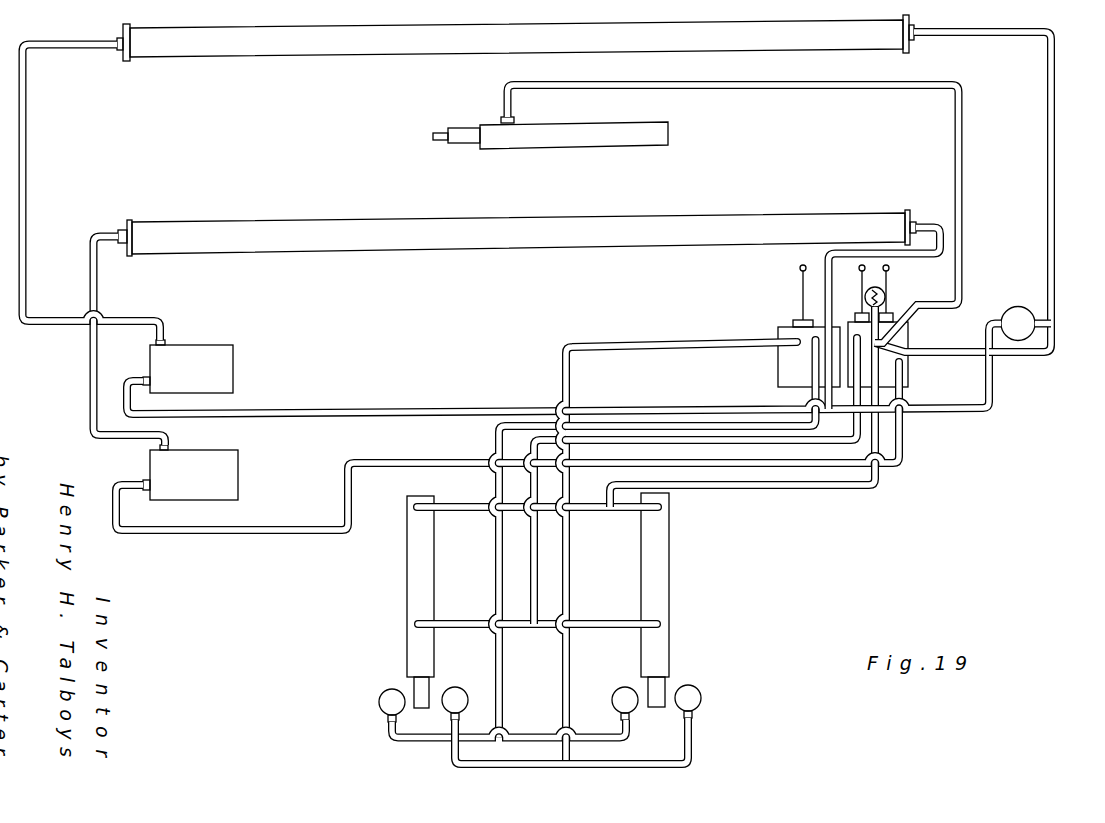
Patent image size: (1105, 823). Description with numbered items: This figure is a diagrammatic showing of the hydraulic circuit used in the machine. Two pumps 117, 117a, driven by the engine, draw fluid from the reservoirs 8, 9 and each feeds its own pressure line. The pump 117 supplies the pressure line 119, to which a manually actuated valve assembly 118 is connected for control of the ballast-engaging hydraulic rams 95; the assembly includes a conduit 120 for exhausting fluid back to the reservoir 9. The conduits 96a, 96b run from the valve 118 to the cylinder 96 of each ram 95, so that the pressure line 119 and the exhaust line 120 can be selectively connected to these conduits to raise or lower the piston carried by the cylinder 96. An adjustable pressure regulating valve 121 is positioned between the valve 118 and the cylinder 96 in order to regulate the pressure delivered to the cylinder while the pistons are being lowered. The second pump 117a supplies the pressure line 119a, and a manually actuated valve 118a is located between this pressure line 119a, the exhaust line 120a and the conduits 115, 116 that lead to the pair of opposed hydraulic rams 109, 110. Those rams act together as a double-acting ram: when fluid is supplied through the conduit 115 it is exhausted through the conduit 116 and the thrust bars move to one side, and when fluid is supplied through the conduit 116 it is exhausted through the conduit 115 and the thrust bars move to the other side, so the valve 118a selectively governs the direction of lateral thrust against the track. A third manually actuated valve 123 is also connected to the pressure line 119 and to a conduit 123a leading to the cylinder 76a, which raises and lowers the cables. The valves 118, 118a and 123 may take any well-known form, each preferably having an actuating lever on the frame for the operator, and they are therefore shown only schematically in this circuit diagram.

The reservoir 9 is at (753, 40).
The reservoir 8 is at (715, 230).
The cylinder 76a is at (582, 143).
The conduit 120 is at (1056, 208).
The conduit 123a is at (953, 149).
The exhaust line 120a is at (823, 268).
The adjustable pressure regulating valve 121 is at (1010, 304).
The third manually actuated valve 123 is at (912, 372).
The manually actuated valve assembly 118 is at (862, 392).
The manually actuated valve 118a is at (778, 373).
The pump 117a is at (237, 360).
The pump 117 is at (240, 463).
The pressure line 119a is at (333, 408).
The pressure line 119 is at (367, 465).
The hydraulic ram 95 is at (395, 574).
The cylinder 96 is at (412, 602).
The conduit 96a is at (622, 510).
The conduit 96b is at (605, 617).
The hydraulic ram 109 is at (457, 692).
The hydraulic ram 110 is at (379, 696).
The conduit 115 is at (452, 760).
The conduit 116 is at (388, 733).